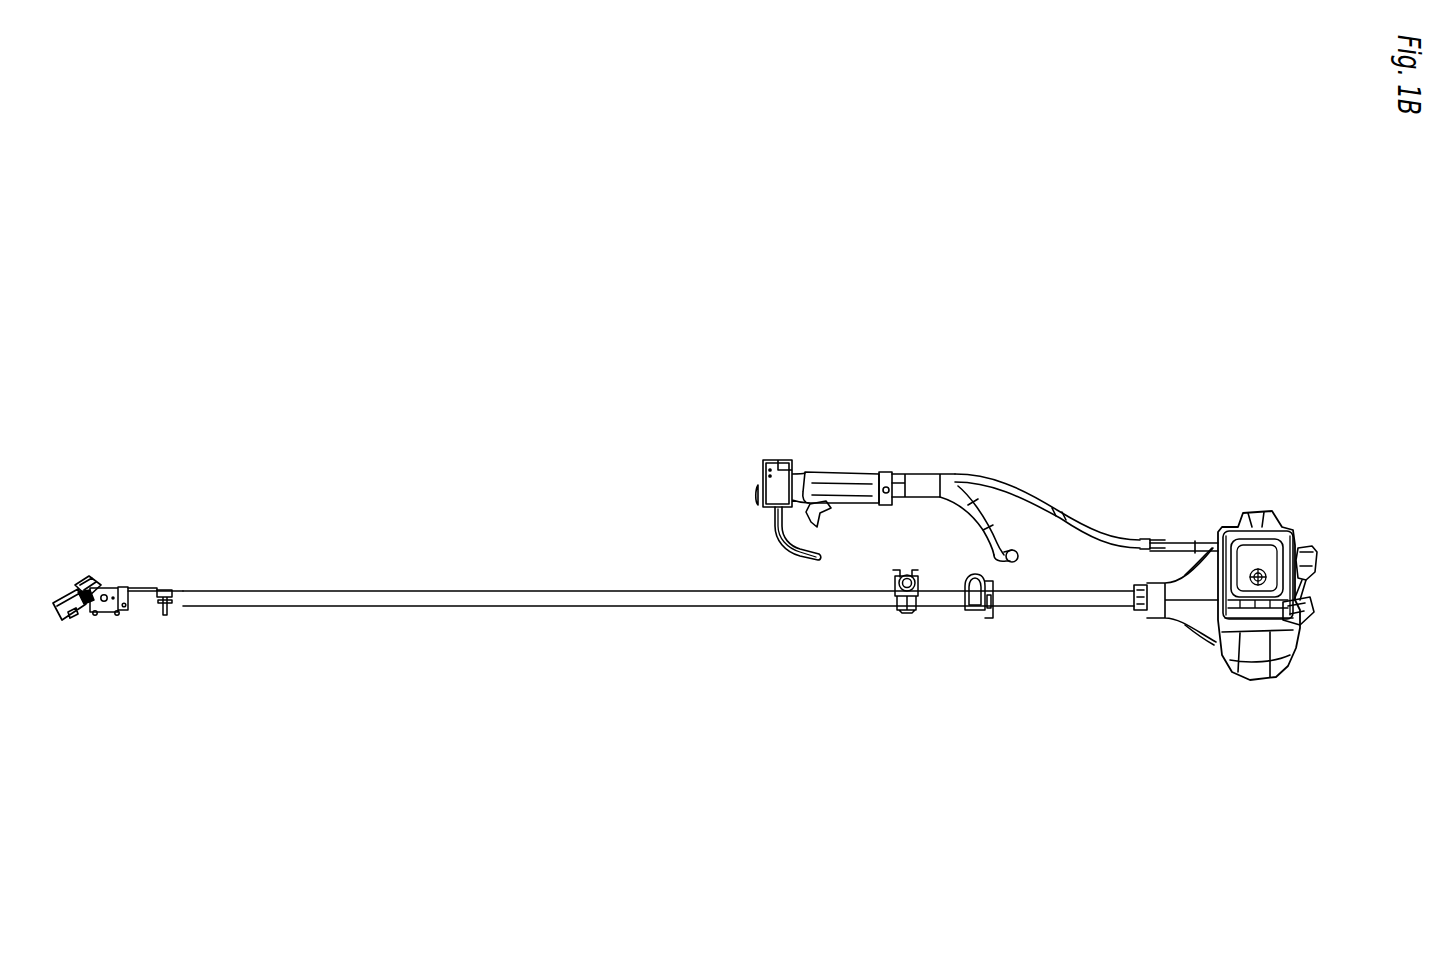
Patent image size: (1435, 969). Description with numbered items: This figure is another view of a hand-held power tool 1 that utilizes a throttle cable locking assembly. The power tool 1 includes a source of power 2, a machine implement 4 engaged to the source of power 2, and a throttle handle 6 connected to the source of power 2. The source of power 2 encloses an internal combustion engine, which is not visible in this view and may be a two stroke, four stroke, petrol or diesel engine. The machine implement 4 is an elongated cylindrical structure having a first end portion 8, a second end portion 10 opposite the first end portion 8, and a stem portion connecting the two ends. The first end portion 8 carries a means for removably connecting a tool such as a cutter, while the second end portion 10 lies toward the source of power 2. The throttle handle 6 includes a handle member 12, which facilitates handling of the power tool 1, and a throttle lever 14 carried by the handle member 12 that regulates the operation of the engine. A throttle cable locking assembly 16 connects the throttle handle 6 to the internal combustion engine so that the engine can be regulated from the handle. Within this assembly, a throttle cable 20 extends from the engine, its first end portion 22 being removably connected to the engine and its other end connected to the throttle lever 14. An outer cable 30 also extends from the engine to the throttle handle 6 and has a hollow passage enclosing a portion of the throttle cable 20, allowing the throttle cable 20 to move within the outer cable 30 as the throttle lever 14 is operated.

The hand-held power tool 1 is at (1208, 367).
The source of power 2 is at (1290, 516).
The machine implement 4 is at (658, 584).
The throttle handle 6 is at (820, 443).
The first end portion 8 is at (192, 593).
The second end portion 10 is at (1116, 608).
The handle member 12 is at (858, 471).
The throttle lever 14 is at (820, 513).
The throttle cable locking assembly 16 is at (1032, 466).
The throttle cable 20 is at (1224, 553).
The first end portion 22 is at (1229, 547).
The outer cable 30 is at (1090, 530).